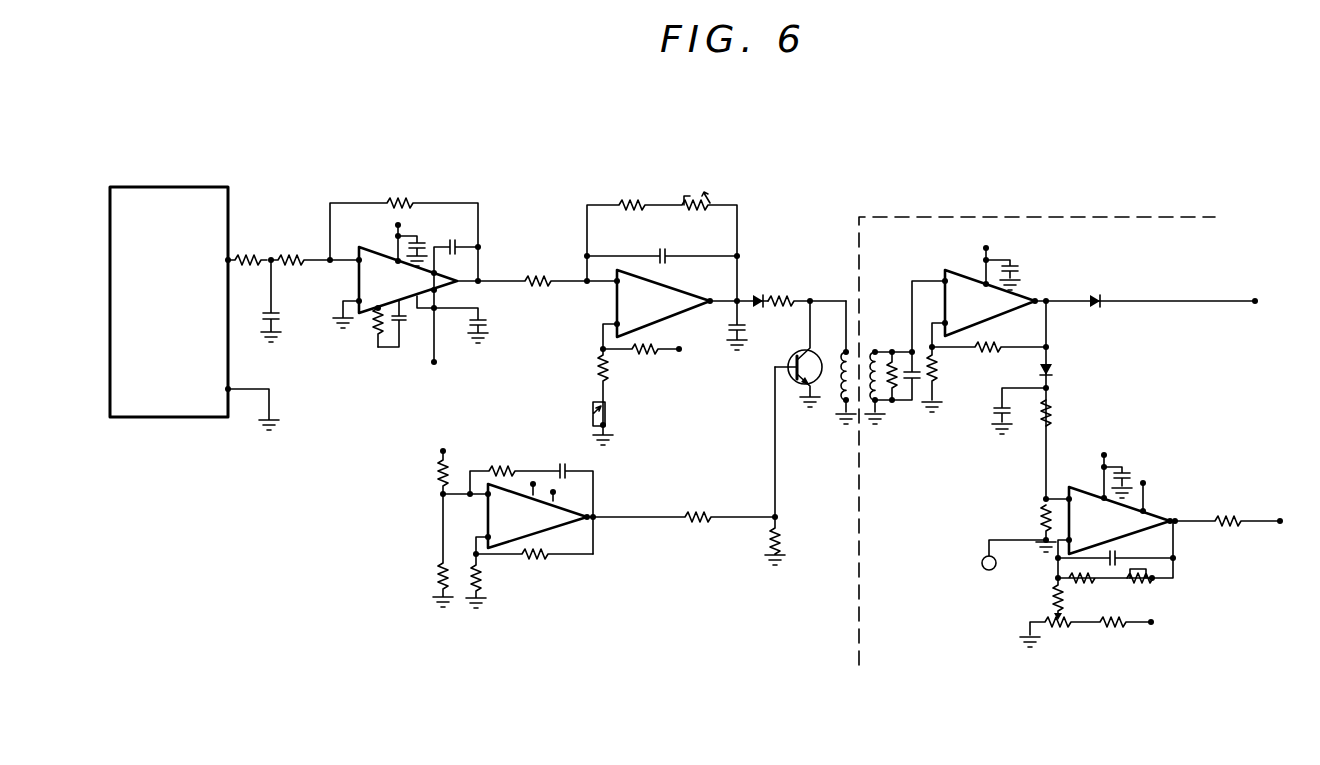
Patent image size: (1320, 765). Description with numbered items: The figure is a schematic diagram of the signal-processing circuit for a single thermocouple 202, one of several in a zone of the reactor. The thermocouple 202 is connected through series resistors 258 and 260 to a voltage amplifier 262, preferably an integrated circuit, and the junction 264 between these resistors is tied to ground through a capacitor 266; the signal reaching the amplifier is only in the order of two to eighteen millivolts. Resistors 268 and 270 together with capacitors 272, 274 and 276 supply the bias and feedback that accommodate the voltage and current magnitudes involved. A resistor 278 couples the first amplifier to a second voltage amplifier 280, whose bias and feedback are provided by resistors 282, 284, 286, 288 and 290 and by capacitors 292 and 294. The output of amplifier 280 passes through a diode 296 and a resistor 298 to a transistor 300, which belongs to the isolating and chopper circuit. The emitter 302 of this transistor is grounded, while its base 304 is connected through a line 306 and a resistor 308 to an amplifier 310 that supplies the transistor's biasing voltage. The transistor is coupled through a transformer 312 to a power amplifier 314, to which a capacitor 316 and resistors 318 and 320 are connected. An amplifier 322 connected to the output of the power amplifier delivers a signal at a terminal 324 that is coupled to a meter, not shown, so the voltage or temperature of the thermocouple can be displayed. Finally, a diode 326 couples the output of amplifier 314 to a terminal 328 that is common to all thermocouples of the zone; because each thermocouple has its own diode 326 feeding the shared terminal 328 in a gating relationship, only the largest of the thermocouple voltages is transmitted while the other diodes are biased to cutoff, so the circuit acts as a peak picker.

The thermocouple 202 is at (194, 308).
The resistor 258 is at (241, 250).
The resistor 260 is at (290, 262).
The voltage amplifier 262 is at (381, 252).
The junction 264 is at (276, 249).
The capacitor 266 is at (280, 315).
The resistor 268 is at (400, 202).
The resistor 270 is at (374, 342).
The capacitor 272 is at (417, 324).
The capacitor 274 is at (452, 240).
The capacitor 276 is at (488, 326).
The resistor 278 is at (536, 276).
The second voltage amplifier 280 is at (668, 318).
The resistor 282 is at (638, 352).
The resistor 284 is at (598, 367).
The resistor 286 is at (610, 422).
The resistor 288 is at (628, 203).
The resistor 290 is at (691, 194).
The capacitor 292 is at (732, 333).
The capacitor 294 is at (662, 248).
The diode 296 is at (757, 296).
The resistor 298 is at (798, 296).
The transistor 300 is at (835, 342).
The emitter 302 is at (797, 385).
The base 304 is at (792, 358).
The line 306 is at (735, 520).
The resistor 308 is at (703, 506).
The amplifier 310 is at (506, 546).
The transformer 312 is at (861, 410).
The power amplifier 314 is at (956, 272).
The capacitor 316 is at (1018, 268).
The resistor 318 is at (938, 374).
The resistor 320 is at (990, 348).
The amplifier 322 is at (1080, 489).
The terminal 324 is at (1282, 513).
The diode 326 is at (1096, 308).
The terminal 328 is at (1256, 298).